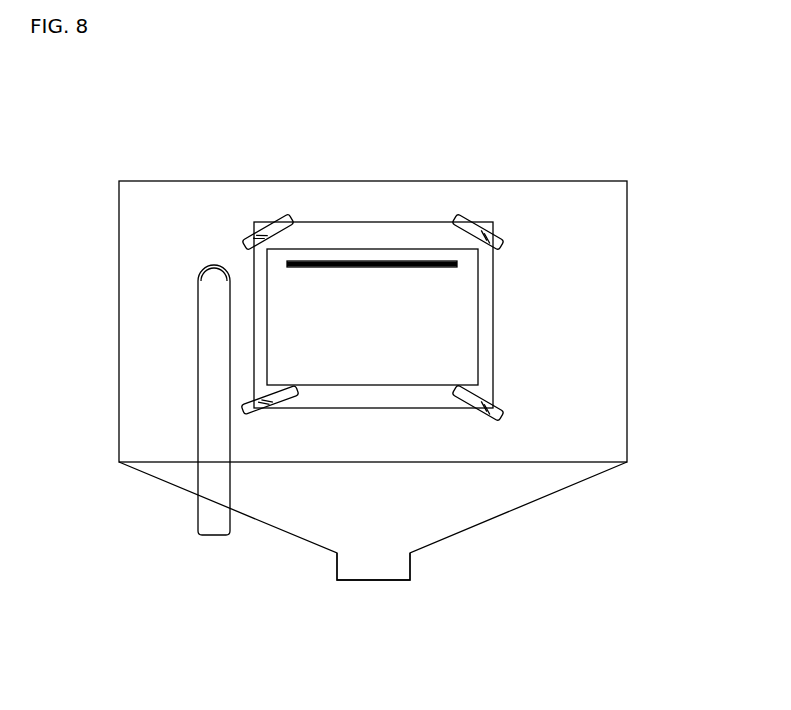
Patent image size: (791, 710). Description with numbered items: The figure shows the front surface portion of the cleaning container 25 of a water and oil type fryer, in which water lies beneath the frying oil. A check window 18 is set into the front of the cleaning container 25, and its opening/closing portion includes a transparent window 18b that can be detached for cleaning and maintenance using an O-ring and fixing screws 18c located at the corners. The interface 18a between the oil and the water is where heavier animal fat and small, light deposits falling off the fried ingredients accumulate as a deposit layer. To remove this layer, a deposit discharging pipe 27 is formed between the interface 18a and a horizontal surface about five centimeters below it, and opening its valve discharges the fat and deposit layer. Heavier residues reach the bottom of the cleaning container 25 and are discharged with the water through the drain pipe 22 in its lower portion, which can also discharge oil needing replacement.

The check window 18 is at (267, 340).
The interface 18a is at (493, 290).
The transparent window 18b is at (453, 323).
The fixing screws 18c is at (470, 237).
The drain pipe 22 is at (395, 572).
The cleaning container 25 is at (603, 387).
The deposit discharging pipe 27 is at (203, 272).